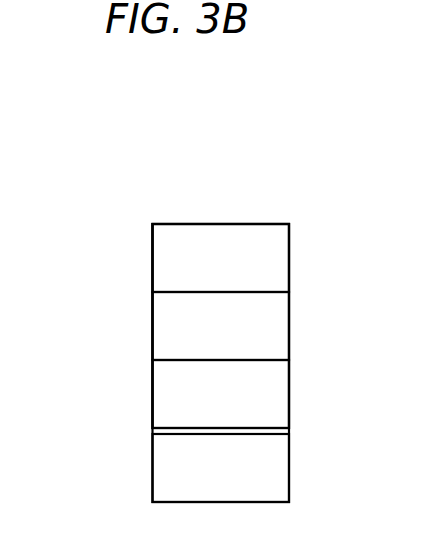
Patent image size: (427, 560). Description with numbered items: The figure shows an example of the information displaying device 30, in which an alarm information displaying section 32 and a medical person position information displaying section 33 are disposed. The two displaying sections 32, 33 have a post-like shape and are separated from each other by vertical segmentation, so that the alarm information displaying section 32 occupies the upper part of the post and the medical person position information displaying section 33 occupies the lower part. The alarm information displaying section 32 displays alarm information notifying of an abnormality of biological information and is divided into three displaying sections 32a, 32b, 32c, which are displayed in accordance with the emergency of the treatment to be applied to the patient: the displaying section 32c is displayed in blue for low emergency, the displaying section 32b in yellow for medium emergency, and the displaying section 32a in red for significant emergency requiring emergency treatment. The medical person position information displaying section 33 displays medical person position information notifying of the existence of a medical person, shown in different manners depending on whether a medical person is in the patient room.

The information displaying device 30 is at (223, 170).
The alarm information displaying section 32 is at (67, 252).
The displaying section 32a is at (152, 265).
The displaying section 32b is at (152, 329).
The displaying section 32c is at (152, 400).
The medical person position information displaying section 33 is at (152, 468).